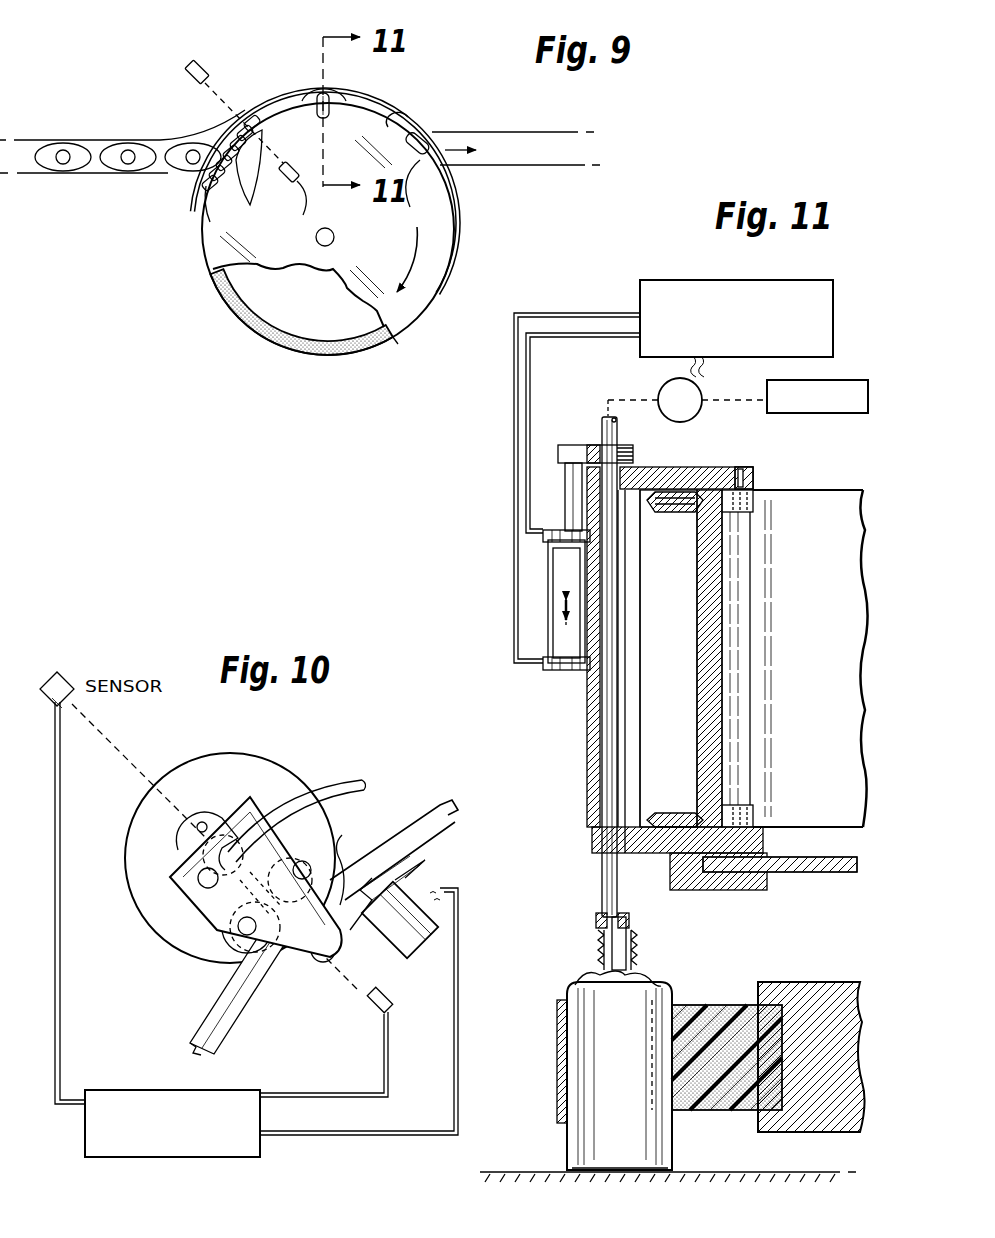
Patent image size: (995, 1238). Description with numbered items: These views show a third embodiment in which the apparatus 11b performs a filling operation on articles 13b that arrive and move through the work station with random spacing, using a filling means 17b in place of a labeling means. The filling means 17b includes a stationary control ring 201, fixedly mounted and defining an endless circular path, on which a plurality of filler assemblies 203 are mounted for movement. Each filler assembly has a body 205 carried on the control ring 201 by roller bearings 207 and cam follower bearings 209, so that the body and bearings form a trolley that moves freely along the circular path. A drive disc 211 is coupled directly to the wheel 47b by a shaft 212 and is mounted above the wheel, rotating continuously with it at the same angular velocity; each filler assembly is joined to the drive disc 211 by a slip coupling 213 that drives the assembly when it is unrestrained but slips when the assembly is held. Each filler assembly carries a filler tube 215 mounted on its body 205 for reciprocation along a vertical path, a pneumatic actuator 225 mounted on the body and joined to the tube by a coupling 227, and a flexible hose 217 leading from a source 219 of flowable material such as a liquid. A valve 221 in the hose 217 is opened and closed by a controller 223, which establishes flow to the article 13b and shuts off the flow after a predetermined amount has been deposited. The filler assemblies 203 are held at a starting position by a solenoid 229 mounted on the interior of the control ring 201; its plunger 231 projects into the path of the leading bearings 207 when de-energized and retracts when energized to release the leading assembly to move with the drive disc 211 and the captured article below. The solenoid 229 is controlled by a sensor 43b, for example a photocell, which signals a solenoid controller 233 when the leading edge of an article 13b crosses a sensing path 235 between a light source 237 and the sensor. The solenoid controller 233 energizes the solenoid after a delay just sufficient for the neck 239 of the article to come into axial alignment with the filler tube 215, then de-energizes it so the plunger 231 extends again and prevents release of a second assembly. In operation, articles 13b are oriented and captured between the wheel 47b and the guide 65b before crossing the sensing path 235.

In FIG. 9, the apparatus 11b is at (129, 277).
In FIG. 9, the articles 13b is at (244, 138).
In FIG. 11, the articles 13b is at (603, 1051).
In FIG. 10, the articles 13b is at (230, 842).
In FIG. 11, the filling means 17b is at (459, 482).
In FIG. 9, the sensor 43b is at (295, 246).
In FIG. 10, the sensor 43b is at (326, 1042).
In FIG. 9, the wheel 47b is at (272, 313).
In FIG. 11, the wheel 47b is at (768, 1028).
In FIG. 9, the guide 65b is at (516, 128).
In FIG. 11, the guide 65b is at (531, 1061).
In FIG. 9, the control ring 201 is at (357, 221).
In FIG. 11, the control ring 201 is at (810, 637).
In FIG. 10, the control ring 201 is at (401, 830).
In FIG. 9, the filler assemblies 203 is at (316, 148).
In FIG. 11, the filler assemblies 203 is at (682, 636).
In FIG. 11, the body 205 is at (681, 658).
In FIG. 10, the body 205 is at (217, 877).
In FIG. 11, the roller bearings 207 is at (719, 659).
In FIG. 11, the cam follower bearings 209 is at (786, 658).
In FIG. 10, the cam follower bearings 209 is at (251, 982).
In FIG. 9, the drive disc 211 is at (423, 354).
In FIG. 11, the drive disc 211 is at (781, 885).
In FIG. 9, the shaft 212 is at (298, 290).
In FIG. 11, the slip coupling 213 is at (718, 890).
In FIG. 11, the filler tube 215 is at (585, 667).
In FIG. 11, the flexible hose 217 is at (578, 380).
In FIG. 10, the flexible hose 217 is at (325, 798).
In FIG. 11, the source 219 is at (793, 373).
In FIG. 11, the valve 221 is at (654, 392).
In FIG. 11, the controller 223 is at (673, 445).
In FIG. 11, the pneumatic actuator 225 is at (521, 600).
In FIG. 11, the coupling 227 is at (586, 465).
In FIG. 10, the solenoid 229 is at (378, 981).
In FIG. 10, the plunger 231 is at (364, 860).
In FIG. 10, the solenoid controller 233 is at (172, 1142).
In FIG. 9, the sensing path 235 is at (179, 104).
In FIG. 9, the light source 237 is at (200, 107).
In FIG. 11, the neck 239 is at (650, 941).